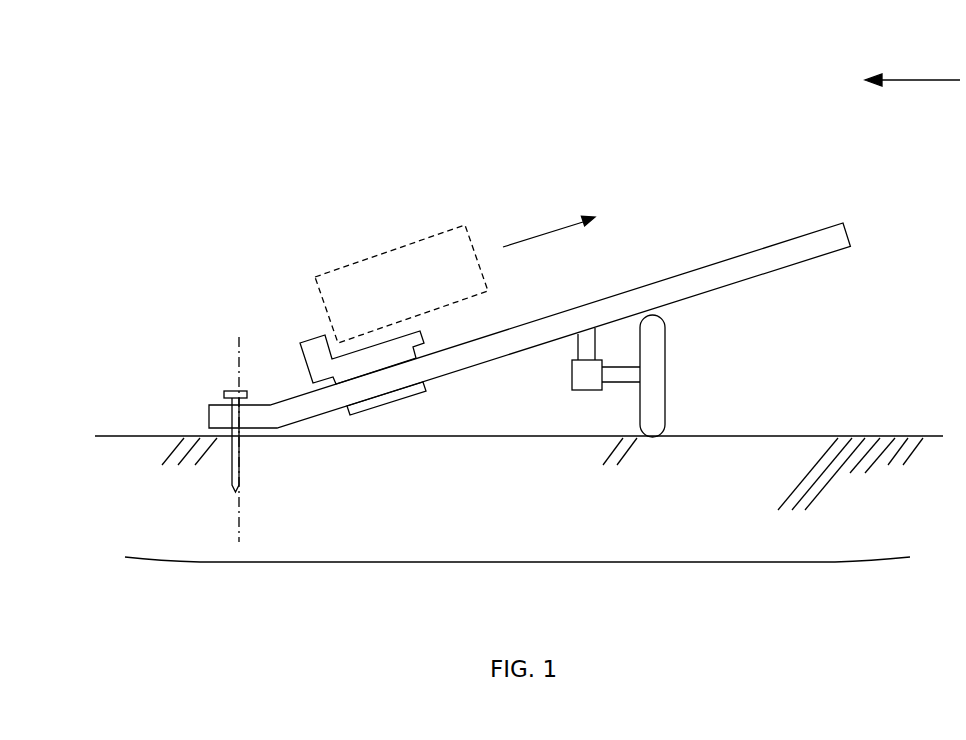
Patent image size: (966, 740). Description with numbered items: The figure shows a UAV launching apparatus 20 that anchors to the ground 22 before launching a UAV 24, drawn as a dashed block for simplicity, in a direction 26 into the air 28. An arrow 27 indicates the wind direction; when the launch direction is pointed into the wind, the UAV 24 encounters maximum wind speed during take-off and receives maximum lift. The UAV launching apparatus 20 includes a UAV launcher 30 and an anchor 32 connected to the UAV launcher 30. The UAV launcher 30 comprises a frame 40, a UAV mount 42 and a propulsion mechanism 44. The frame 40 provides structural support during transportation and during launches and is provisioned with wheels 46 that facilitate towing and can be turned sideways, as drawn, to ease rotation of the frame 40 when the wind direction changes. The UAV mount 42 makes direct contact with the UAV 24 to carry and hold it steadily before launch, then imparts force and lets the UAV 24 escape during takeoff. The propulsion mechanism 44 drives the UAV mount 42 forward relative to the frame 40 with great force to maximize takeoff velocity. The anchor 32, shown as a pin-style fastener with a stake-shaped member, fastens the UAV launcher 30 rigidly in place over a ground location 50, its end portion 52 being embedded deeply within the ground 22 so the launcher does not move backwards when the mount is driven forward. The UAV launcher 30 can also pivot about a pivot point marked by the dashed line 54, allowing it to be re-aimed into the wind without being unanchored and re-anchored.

The UAV launching apparatus 20 is at (148, 85).
The ground 22 is at (522, 495).
The UAV 24 is at (410, 296).
The direction 26 is at (550, 232).
The arrow 27 is at (904, 80).
The air 28 is at (780, 100).
The UAV launcher 30 is at (268, 304).
The anchor 32 is at (207, 357).
The frame 40 is at (550, 296).
The UAV mount 42 is at (423, 336).
The propulsion mechanism 44 is at (426, 385).
The wheels 46 is at (706, 343).
The ground location 50 is at (518, 562).
The end portion 52 is at (266, 466).
The dashed line 54 is at (239, 510).